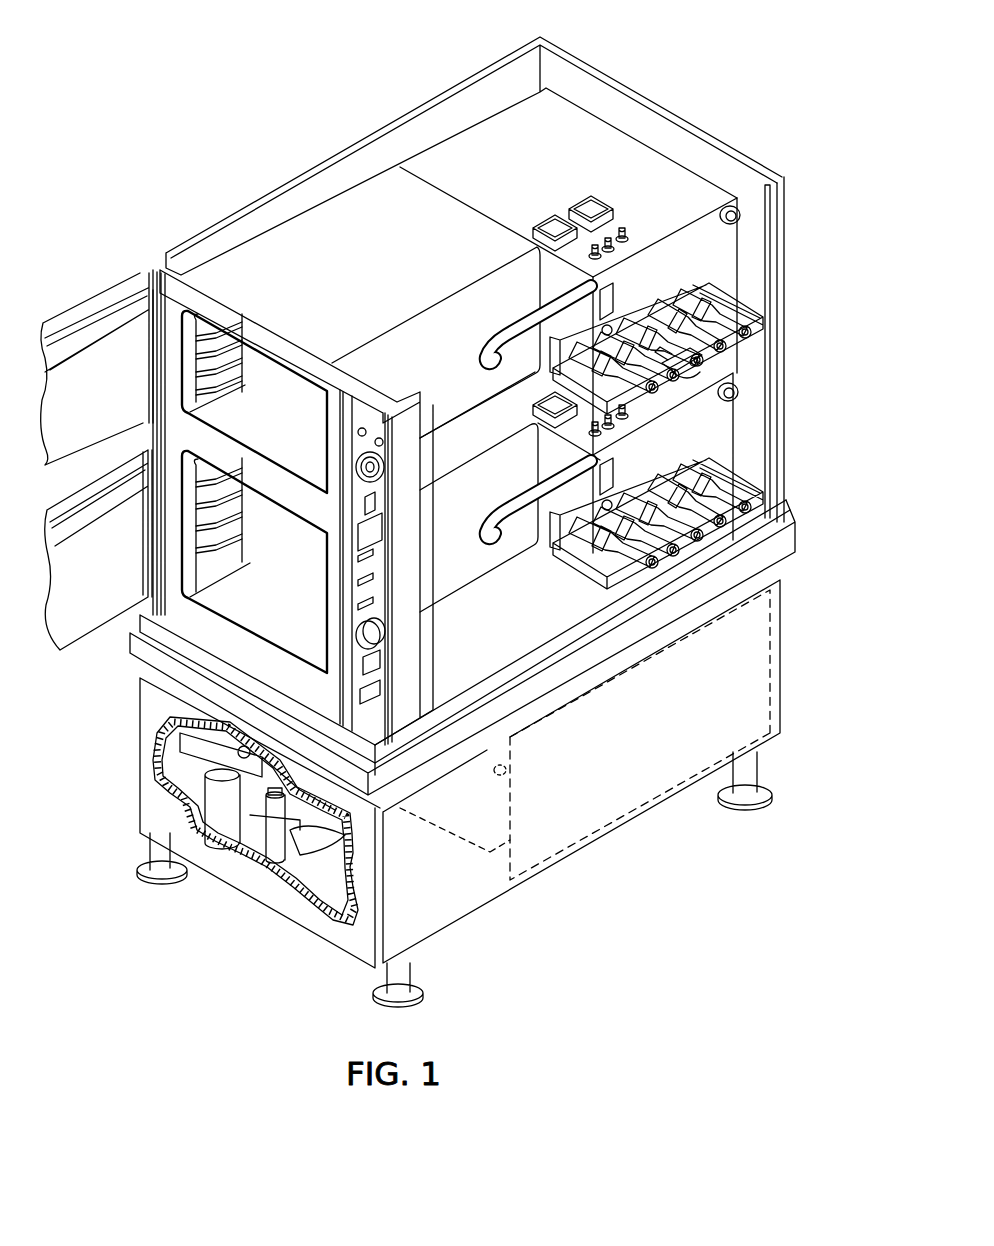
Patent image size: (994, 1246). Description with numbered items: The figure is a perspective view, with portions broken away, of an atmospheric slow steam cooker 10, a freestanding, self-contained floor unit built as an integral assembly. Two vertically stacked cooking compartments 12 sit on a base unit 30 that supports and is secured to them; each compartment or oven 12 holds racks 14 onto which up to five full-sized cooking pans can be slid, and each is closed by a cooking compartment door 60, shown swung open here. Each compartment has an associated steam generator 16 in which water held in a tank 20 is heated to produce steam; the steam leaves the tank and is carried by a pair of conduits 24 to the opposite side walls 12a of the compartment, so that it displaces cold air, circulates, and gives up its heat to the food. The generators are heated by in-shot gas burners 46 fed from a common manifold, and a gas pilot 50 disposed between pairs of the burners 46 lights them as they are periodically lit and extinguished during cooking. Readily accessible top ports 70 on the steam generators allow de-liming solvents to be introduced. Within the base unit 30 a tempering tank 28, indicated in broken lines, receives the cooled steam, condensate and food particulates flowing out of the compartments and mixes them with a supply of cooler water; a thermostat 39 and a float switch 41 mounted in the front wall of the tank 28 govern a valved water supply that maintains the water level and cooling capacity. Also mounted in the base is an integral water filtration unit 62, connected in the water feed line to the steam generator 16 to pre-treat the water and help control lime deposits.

The atmospheric slow steam cooker 10 is at (690, 75).
The cooking compartment 12 is at (302, 435).
The side wall 12a is at (446, 361).
The rack 14 is at (227, 383).
The steam generator 16 is at (718, 159).
The tank 20 is at (650, 190).
The conduit 24 is at (533, 318).
The tempering tank 28 is at (643, 797).
The base unit 30 is at (468, 902).
The thermostat 39 is at (455, 830).
The float switch 41 is at (497, 775).
The burner 46 is at (728, 292).
The gas pilot 50 is at (689, 374).
The cooking compartment door 60 is at (80, 301).
The water filtration unit 62 is at (148, 781).
The top port 70 is at (552, 223).